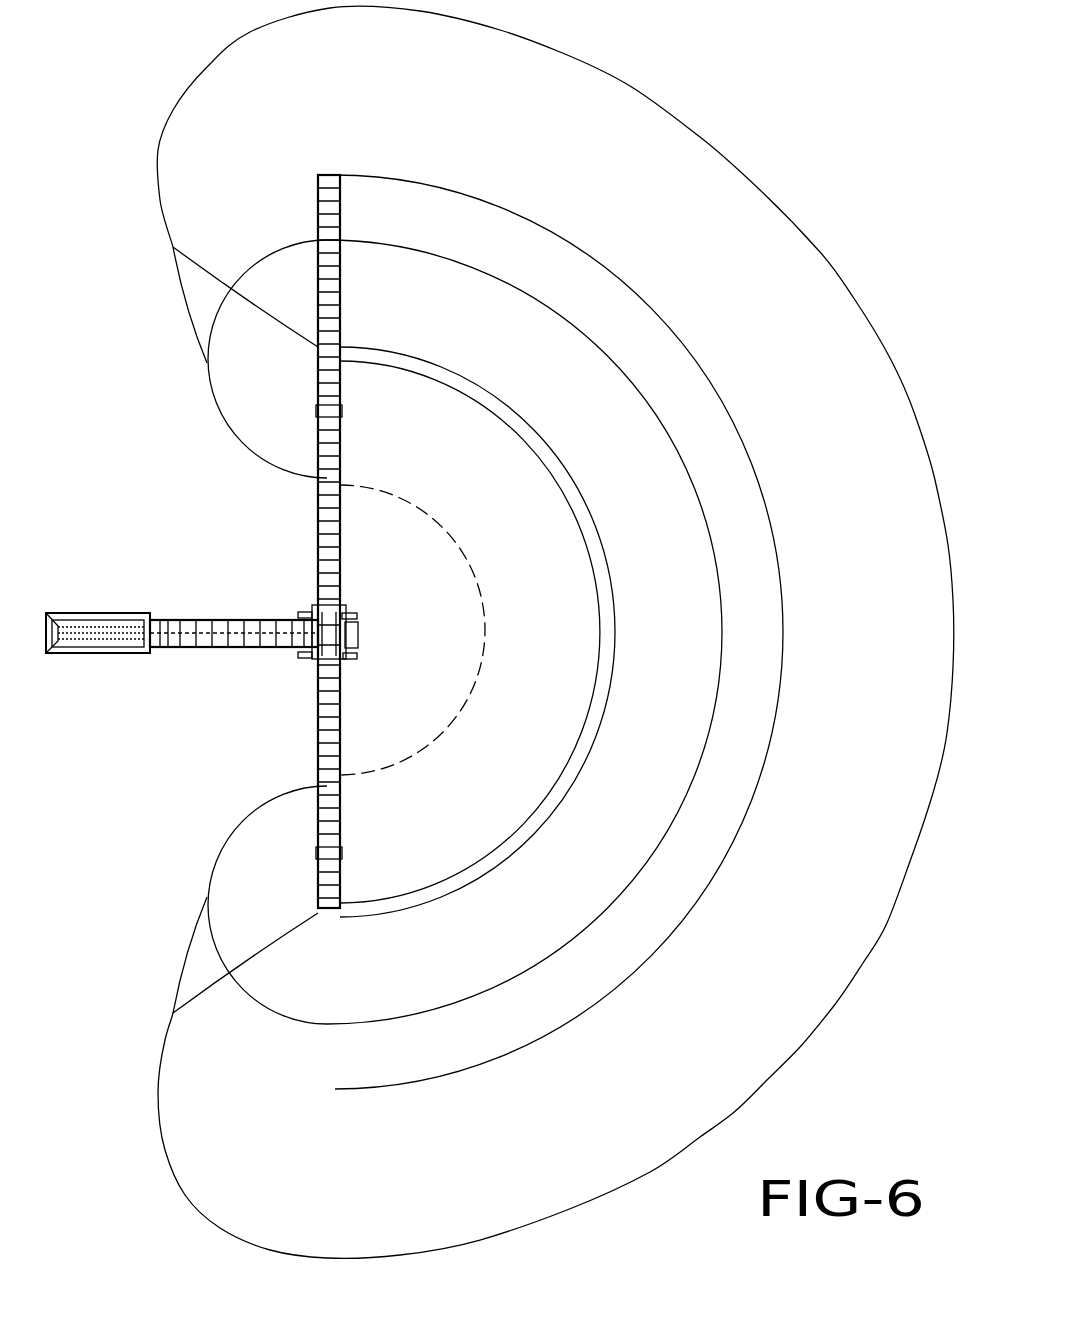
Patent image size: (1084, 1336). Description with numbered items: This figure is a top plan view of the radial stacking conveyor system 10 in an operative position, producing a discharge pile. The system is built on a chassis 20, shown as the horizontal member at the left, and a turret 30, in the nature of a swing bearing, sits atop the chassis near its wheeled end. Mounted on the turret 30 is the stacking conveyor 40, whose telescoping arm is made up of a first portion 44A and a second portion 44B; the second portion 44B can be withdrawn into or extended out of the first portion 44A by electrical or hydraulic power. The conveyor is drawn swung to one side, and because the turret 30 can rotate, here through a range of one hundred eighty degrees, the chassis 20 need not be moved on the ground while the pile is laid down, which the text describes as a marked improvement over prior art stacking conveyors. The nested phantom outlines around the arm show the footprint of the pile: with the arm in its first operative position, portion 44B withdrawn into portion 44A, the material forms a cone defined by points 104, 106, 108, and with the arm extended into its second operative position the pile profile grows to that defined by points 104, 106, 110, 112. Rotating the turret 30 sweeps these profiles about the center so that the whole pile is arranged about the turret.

The radial stacking conveyor system 10 is at (147, 558).
The chassis 20 is at (185, 648).
The turret 30 is at (340, 650).
The stacking conveyor 40 is at (271, 544).
The first portion of telescoping arm 44A is at (318, 527).
The second portion of telescoping arm 44B is at (318, 198).
The pile profile point 104 is at (478, 582).
The pile profile point 106 is at (602, 605).
The pile profile point 108 is at (722, 610).
The pile profile point 110 is at (783, 595).
The pile profile point 112 is at (890, 358).